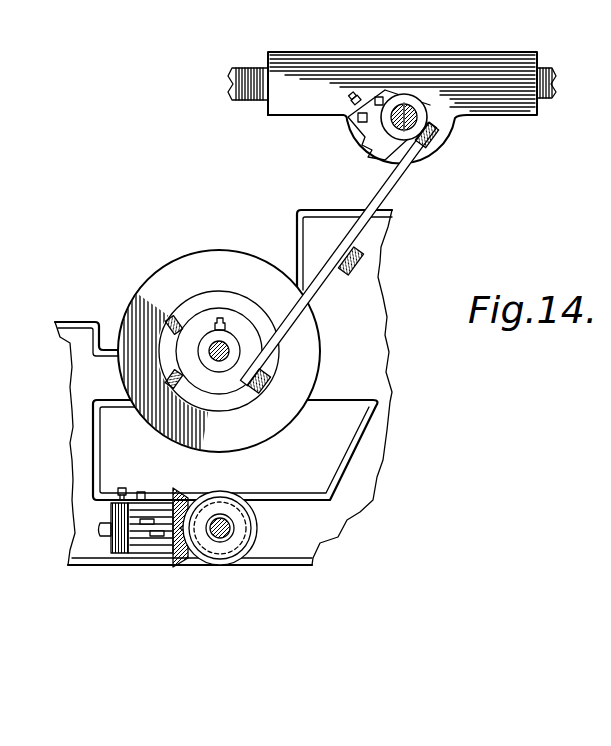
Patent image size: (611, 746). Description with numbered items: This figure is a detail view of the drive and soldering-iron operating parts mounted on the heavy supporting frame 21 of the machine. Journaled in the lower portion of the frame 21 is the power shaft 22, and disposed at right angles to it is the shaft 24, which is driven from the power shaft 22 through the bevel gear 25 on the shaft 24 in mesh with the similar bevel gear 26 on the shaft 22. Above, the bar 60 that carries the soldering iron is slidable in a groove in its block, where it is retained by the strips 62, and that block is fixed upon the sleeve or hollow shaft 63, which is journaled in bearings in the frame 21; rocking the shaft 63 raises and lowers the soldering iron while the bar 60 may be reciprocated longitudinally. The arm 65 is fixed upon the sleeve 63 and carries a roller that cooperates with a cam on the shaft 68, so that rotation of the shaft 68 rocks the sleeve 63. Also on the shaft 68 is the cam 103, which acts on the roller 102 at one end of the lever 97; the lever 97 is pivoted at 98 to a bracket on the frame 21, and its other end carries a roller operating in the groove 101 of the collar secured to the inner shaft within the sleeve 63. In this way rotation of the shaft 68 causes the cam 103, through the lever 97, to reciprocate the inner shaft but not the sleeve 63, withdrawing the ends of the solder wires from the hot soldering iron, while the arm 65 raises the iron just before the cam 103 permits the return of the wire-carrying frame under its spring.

The supporting frame 21 is at (372, 462).
The power shaft 22 is at (230, 522).
The shaft 24 is at (147, 537).
The bevel gear 25 is at (178, 557).
The bevel gear 26 is at (246, 542).
The bar 60 is at (257, 103).
The strips 62 is at (510, 60).
The sleeve or hollow shaft 63 is at (414, 104).
The arm 65 is at (377, 135).
The shaft 68 is at (228, 340).
The lever 97 is at (404, 187).
The pivot 98 is at (363, 262).
The groove 101 is at (420, 110).
The roller 102 is at (271, 380).
The cam 103 is at (225, 402).